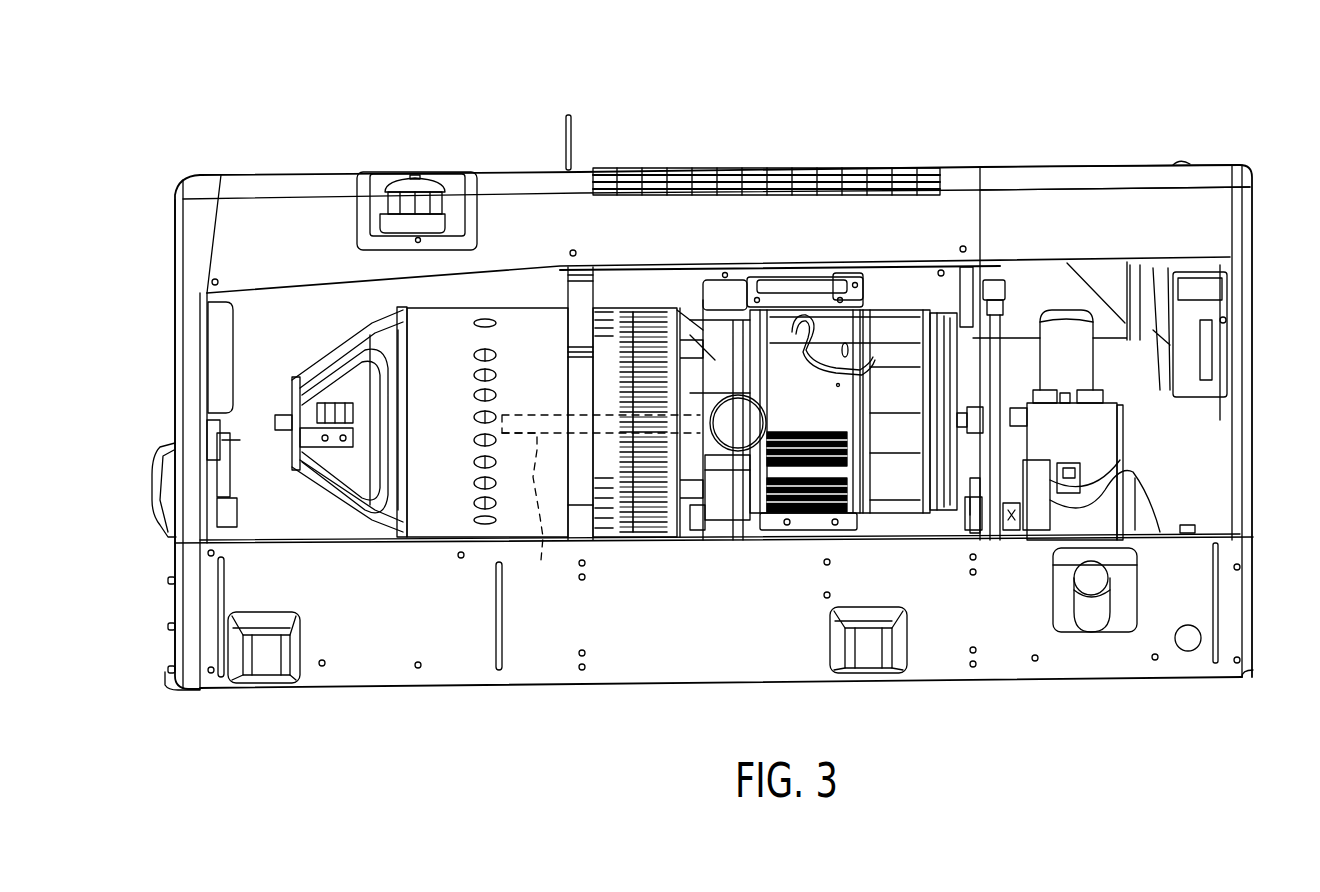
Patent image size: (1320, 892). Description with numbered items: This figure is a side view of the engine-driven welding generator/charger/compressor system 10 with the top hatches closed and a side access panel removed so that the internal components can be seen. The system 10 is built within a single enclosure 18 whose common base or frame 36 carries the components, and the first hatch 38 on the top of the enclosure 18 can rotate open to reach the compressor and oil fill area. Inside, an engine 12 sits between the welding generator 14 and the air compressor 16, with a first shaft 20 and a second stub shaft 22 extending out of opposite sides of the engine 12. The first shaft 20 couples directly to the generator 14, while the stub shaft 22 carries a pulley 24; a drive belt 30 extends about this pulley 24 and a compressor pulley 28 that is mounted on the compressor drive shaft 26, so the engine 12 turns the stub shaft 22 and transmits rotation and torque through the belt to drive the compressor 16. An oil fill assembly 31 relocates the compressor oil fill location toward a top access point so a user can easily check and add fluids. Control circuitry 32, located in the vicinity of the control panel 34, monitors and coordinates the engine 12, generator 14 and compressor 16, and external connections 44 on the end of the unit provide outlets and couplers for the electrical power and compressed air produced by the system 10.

The welding generator/charger/compressor system 10 is at (1112, 116).
The engine 12 is at (892, 287).
The welding generator 14 is at (527, 326).
The air compressor 16 is at (1133, 472).
The enclosure 18 is at (333, 155).
The first shaft 20 is at (601, 505).
The second shaft 22 is at (1020, 413).
The pulley 24 is at (1007, 398).
The compressor drive shaft 26 is at (1015, 533).
The compressor pulley 28 is at (968, 518).
The drive belt 30 is at (977, 483).
The oil fill assembly 31 is at (1010, 305).
The control circuitry 32 is at (237, 322).
The control panel 34 is at (172, 221).
The frame 36 is at (350, 543).
The first access panel (hatch) 38 is at (1030, 165).
The external connections 44 is at (140, 470).